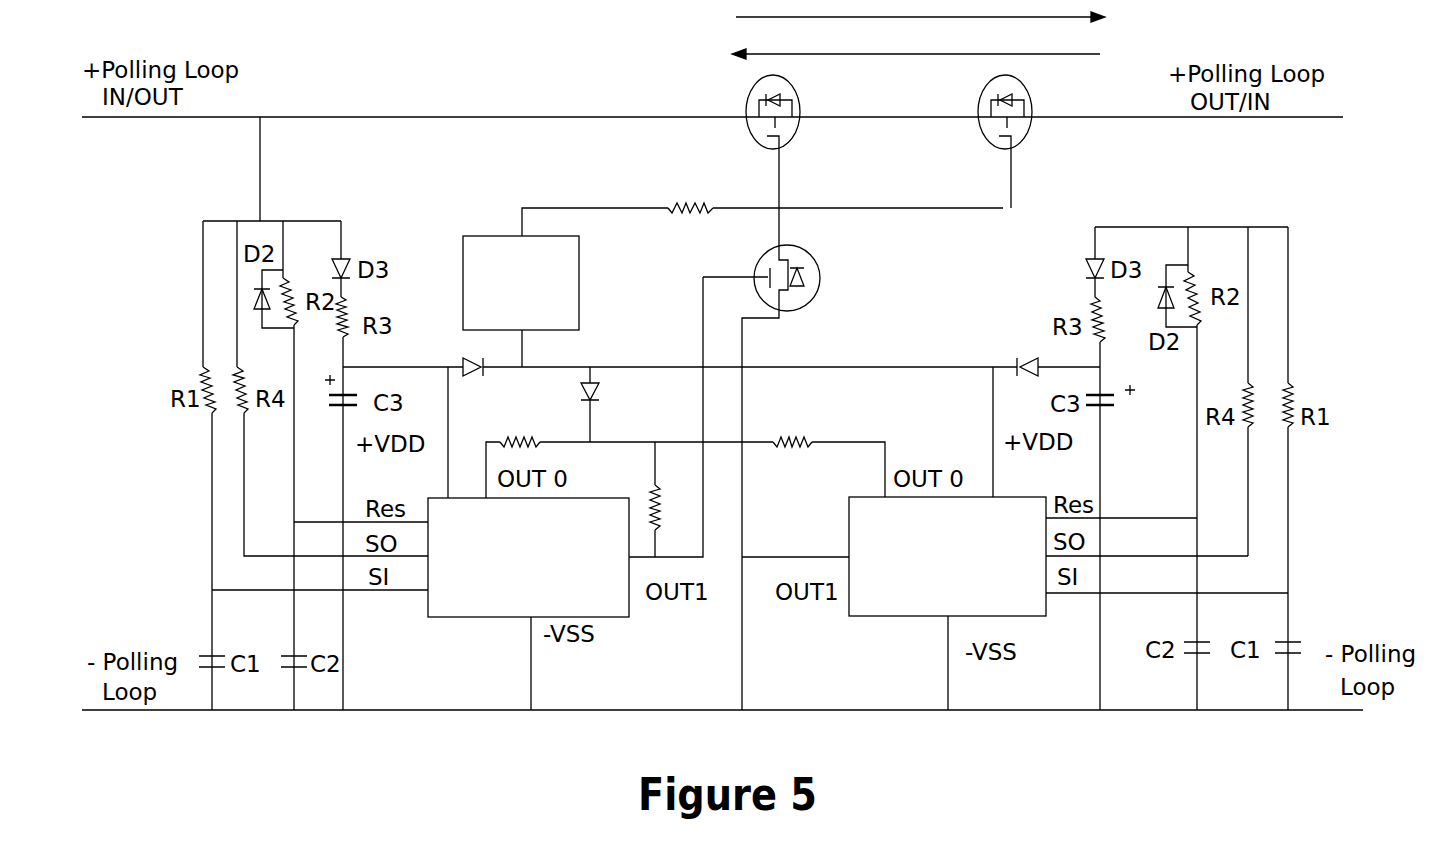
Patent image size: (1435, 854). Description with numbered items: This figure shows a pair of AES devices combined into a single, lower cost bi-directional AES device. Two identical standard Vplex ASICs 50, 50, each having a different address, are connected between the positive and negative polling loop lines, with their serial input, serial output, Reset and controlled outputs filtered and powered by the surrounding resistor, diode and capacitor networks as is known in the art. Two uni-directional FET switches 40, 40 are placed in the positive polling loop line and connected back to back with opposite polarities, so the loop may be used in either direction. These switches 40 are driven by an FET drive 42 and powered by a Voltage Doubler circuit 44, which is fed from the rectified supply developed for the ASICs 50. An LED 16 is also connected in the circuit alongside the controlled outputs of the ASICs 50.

The LED 16 is at (598, 391).
The uni-directional FET switch 40 is at (800, 97).
The FET drive 42 is at (820, 268).
The Voltage Doubler circuit 44 is at (579, 270).
The standard Vplex ASIC 50 is at (460, 617).